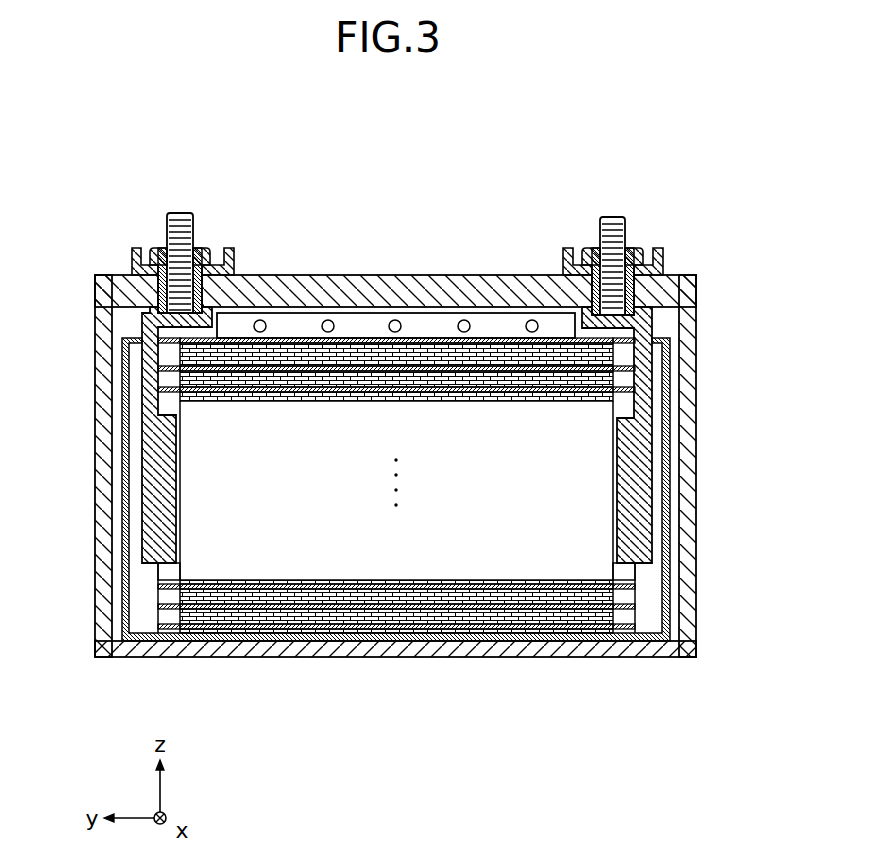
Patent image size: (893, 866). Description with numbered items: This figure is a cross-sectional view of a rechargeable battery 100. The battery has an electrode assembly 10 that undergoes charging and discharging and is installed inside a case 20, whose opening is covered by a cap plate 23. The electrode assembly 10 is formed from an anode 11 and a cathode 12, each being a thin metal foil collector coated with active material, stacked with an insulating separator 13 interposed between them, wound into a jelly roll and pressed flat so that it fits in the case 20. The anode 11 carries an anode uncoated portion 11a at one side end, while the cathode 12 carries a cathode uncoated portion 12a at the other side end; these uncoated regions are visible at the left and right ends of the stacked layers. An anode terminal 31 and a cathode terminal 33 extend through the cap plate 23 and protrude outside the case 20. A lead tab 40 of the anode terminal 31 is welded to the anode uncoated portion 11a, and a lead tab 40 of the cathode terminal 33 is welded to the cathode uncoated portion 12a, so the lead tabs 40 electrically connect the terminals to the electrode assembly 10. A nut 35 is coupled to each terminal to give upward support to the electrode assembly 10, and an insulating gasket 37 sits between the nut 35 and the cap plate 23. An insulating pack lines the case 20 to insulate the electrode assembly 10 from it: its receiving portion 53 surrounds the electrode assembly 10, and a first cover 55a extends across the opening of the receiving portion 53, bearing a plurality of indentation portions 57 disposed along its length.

The rechargeable battery 100 is at (372, 227).
The electrode assembly 10 is at (430, 562).
The anode 11 is at (571, 630).
The anode uncoated portion 11a is at (172, 630).
The cathode 12 is at (525, 618).
The cathode uncoated portion 12a is at (622, 630).
The separator 13 is at (377, 612).
The case 20 is at (103, 395).
The cap plate 23 is at (503, 284).
The anode terminal 31 is at (182, 213).
The cathode terminal 33 is at (617, 217).
The nut 35 is at (205, 248).
The gasket 37 is at (139, 248).
The lead tab 40 is at (160, 466).
The receiving portion 53 is at (668, 558).
The first cover 55a is at (432, 328).
The indentation portions 57 is at (328, 321).